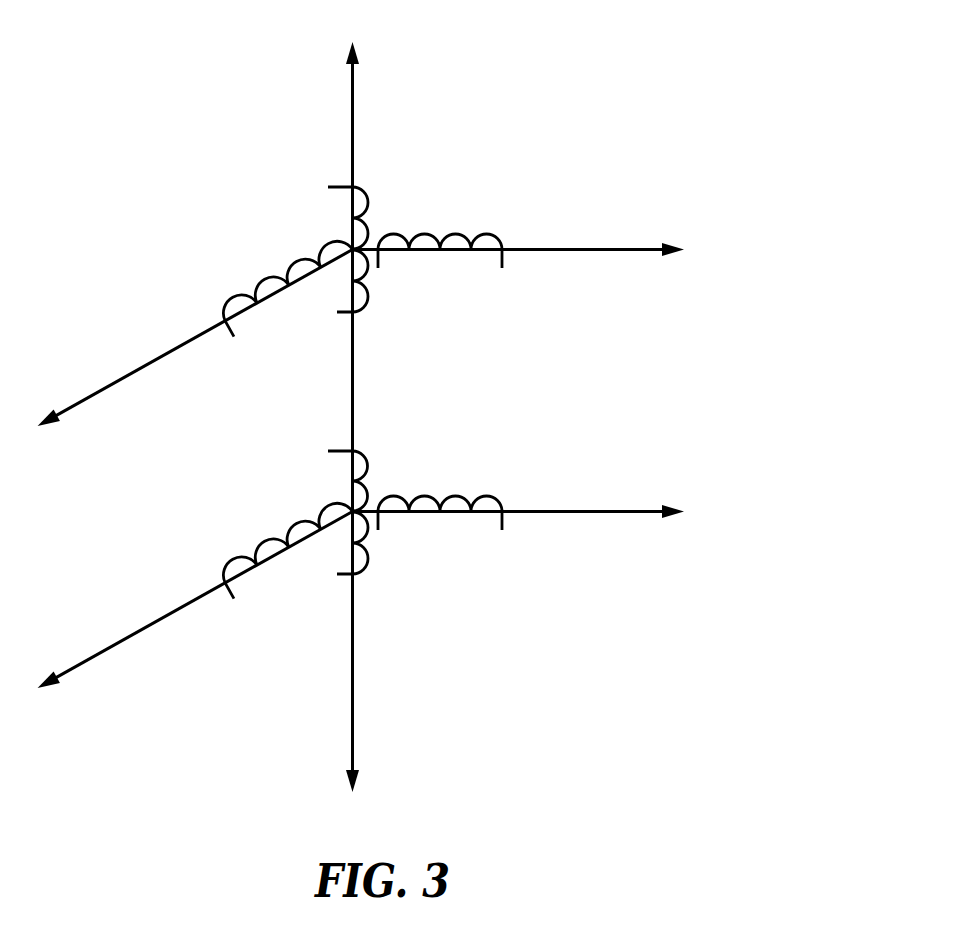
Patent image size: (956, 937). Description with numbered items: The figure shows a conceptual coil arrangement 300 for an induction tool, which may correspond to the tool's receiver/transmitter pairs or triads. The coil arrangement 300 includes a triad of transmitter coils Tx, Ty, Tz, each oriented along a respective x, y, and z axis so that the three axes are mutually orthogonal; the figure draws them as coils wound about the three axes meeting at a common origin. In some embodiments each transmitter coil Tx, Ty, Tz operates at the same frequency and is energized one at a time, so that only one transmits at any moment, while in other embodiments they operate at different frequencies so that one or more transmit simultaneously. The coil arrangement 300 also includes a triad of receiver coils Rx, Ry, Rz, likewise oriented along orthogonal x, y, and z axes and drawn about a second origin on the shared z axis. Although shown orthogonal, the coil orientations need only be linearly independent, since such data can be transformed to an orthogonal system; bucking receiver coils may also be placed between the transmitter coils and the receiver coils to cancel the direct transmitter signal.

The coil arrangement 300 is at (628, 39).
The transmitter coil Tx is at (289, 286).
The transmitter coil Ty is at (445, 238).
The transmitter coil Tz is at (361, 246).
The receiver coil Rx is at (289, 548).
The receiver coil Ry is at (448, 505).
The receiver coil Rz is at (361, 512).